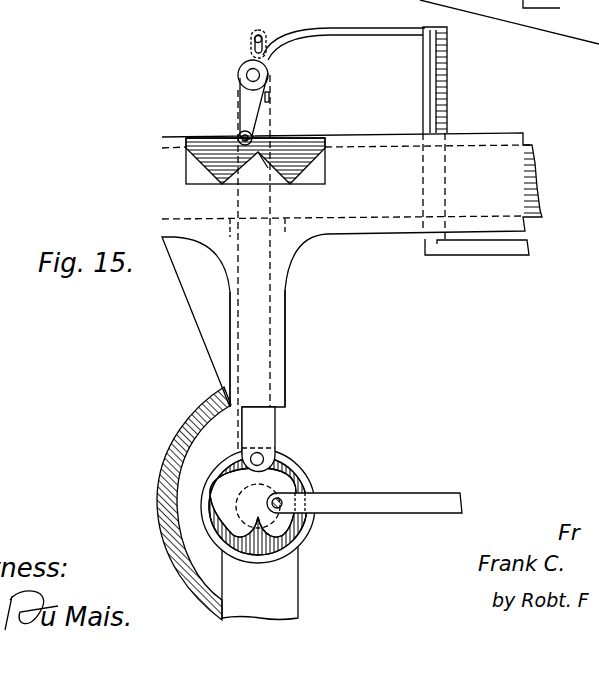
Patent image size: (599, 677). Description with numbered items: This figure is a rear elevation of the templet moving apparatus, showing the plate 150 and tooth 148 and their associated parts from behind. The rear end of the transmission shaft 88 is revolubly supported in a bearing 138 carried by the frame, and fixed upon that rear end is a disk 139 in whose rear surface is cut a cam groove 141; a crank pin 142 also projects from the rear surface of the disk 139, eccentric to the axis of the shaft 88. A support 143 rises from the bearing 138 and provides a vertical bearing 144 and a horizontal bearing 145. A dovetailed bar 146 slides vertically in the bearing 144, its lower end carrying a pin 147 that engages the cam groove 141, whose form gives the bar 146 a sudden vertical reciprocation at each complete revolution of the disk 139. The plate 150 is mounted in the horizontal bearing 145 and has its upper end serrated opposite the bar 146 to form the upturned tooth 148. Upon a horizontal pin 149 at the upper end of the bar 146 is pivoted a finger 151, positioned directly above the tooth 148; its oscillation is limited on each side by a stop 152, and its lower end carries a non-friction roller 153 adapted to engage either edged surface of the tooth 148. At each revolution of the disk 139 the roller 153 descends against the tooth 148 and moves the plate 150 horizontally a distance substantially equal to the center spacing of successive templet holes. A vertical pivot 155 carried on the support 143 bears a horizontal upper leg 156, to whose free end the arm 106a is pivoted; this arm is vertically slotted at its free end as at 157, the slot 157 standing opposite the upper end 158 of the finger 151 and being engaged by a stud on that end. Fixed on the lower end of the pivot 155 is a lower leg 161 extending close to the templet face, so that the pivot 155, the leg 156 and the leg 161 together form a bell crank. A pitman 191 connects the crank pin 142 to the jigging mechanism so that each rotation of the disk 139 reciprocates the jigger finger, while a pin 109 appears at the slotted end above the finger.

The transmission shaft 88 is at (217, 517).
The curved guide bar 106a is at (356, 28).
The pin 109 is at (254, 29).
The bearing 138 is at (285, 582).
The disk 139 is at (293, 460).
The cam groove 141 is at (292, 470).
The crank pin 142 is at (272, 501).
The support 143 is at (208, 240).
The vertical bearing 144 is at (284, 319).
The horizontal bearing 145 is at (392, 232).
The bar 146 is at (267, 425).
The pin 147 is at (260, 453).
The tooth 148 is at (284, 147).
The pin 149 is at (269, 66).
The plate 150 is at (533, 168).
The finger 151 is at (250, 117).
The stop 152 is at (271, 94).
The non-friction roller 153 is at (237, 132).
The vertical pivot 155 is at (432, 27).
The leg 156 is at (419, 42).
The slot 157 is at (251, 40).
The upper end of finger 158 is at (250, 50).
The lower leg 161 is at (505, 252).
The pitman 191 is at (432, 493).